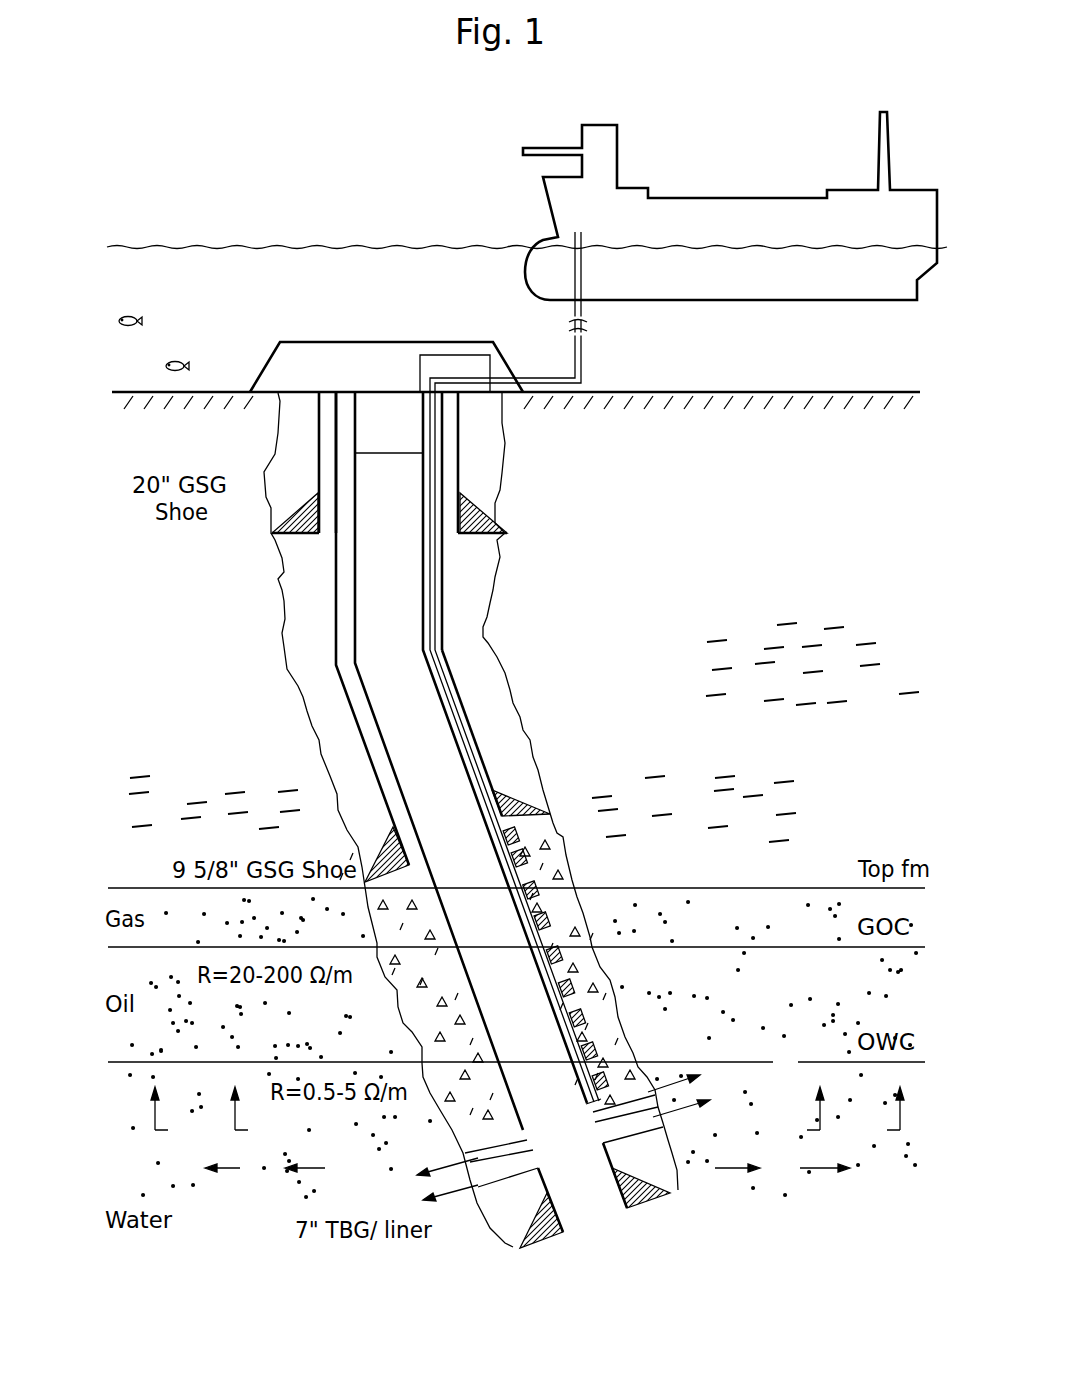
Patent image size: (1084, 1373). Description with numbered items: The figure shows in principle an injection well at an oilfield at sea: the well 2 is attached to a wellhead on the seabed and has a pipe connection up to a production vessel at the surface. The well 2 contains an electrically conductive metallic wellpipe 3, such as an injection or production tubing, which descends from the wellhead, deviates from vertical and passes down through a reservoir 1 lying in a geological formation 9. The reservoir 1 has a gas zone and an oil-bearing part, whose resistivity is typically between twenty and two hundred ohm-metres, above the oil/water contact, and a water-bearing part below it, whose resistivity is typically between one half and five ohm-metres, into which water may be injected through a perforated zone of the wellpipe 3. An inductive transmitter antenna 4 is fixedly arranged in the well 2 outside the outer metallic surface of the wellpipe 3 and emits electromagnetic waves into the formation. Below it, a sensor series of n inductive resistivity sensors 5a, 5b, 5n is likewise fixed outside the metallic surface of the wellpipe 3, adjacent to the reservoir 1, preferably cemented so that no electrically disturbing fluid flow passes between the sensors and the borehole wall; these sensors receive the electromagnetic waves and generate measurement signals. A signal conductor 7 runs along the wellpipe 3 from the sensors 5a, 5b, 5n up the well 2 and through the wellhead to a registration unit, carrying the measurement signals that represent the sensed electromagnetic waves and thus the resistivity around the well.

The reservoir 1 is at (751, 990).
The well 2 is at (395, 593).
The wellpipe 3 is at (540, 940).
The transmitter antenna 4 is at (512, 828).
The resistivity sensor 5a is at (627, 958).
The resistivity sensor 5b is at (554, 954).
The resistivity sensor 5n is at (588, 1049).
The signal conductor 7 is at (435, 627).
The geological formation 9 is at (794, 1077).